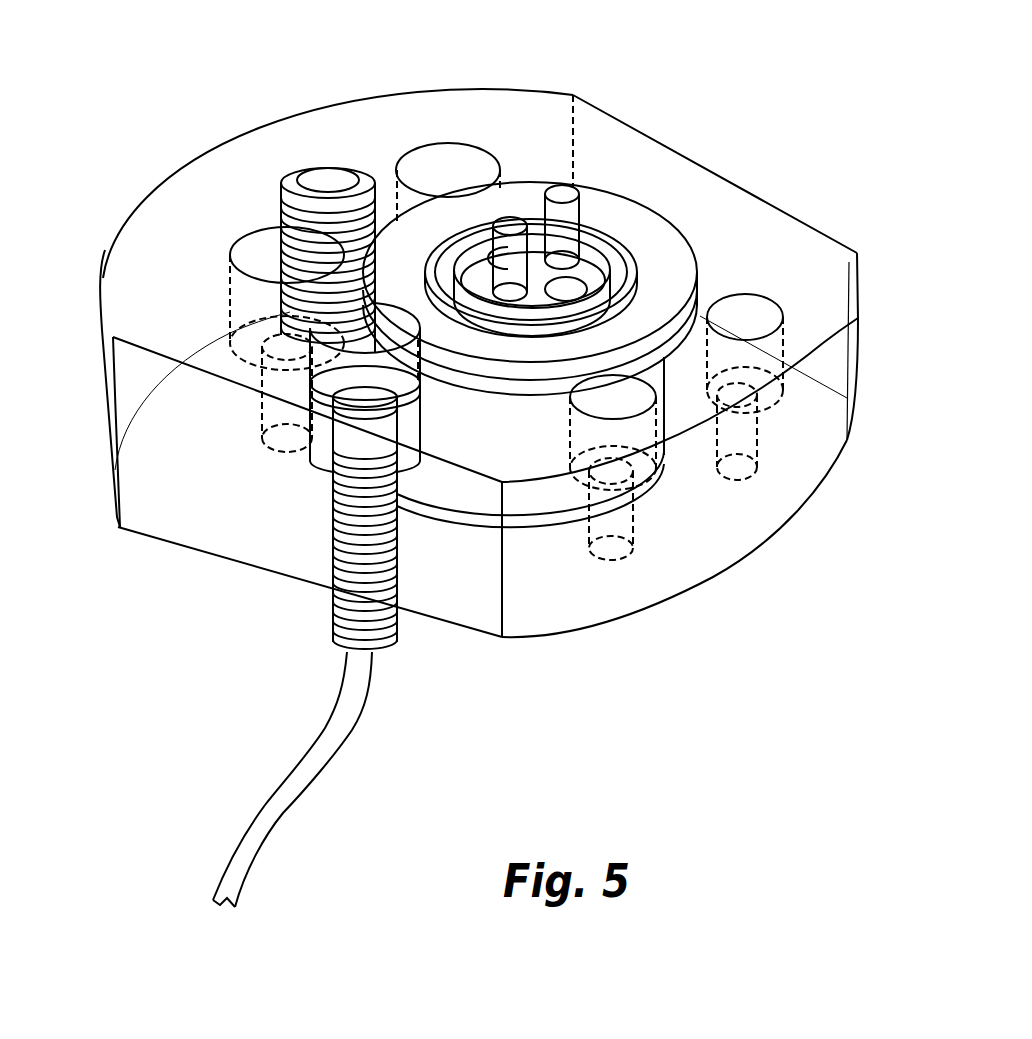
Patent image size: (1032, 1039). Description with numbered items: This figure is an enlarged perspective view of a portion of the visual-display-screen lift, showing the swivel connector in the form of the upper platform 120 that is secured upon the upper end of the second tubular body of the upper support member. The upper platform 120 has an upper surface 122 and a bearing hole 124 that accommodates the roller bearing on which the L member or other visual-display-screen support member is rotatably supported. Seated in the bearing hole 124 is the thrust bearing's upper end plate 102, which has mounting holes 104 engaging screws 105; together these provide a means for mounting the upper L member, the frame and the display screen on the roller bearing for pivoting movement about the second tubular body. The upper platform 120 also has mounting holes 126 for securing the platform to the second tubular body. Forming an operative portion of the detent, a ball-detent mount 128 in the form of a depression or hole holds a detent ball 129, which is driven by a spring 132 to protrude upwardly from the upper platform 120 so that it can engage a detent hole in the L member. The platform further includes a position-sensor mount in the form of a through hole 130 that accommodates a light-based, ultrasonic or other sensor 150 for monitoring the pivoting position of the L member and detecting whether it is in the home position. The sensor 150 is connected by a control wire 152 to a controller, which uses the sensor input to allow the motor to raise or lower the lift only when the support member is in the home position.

The upper end plate 102 is at (600, 268).
The mounting holes 104 is at (630, 280).
The screws 105 is at (512, 225).
The upper platform 120 is at (562, 617).
The upper surface 122 is at (155, 253).
The bearing hole 124 is at (662, 370).
The mounting holes 126 is at (270, 413).
The ball-detent mount 128 is at (280, 212).
The detent ball 129 is at (323, 183).
The through hole 130 is at (420, 427).
The spring 132 is at (283, 244).
The sensor 150 is at (352, 442).
The control wire 152 is at (300, 772).